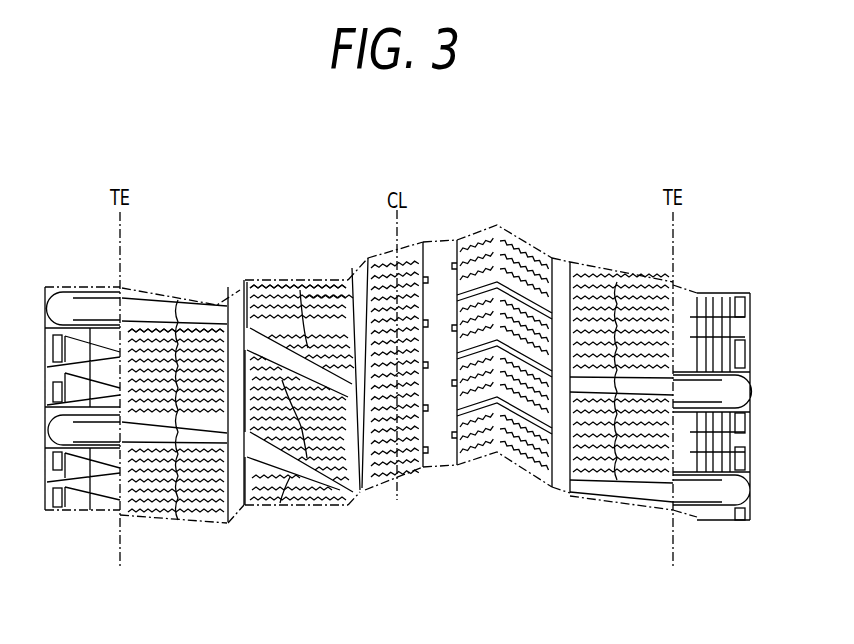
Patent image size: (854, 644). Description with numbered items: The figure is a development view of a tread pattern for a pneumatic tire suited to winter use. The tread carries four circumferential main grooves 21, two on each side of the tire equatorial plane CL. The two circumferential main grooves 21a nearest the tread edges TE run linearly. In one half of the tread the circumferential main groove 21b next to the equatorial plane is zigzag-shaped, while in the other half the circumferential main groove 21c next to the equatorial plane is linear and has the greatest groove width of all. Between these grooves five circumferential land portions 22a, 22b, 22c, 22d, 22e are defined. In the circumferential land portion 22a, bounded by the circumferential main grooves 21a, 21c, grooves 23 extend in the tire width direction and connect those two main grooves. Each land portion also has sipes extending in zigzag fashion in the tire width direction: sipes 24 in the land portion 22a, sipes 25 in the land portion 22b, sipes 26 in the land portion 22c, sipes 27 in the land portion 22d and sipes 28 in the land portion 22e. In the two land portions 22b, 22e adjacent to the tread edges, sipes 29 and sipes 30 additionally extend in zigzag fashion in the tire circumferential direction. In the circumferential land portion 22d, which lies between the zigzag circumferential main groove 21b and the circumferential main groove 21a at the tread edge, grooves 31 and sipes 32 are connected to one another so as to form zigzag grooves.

The circumferential main groove 21 is at (398, 345).
The circumferential main groove adjacent to tread edge 21a is at (240, 302).
The zigzag circumferential main groove 21b is at (360, 275).
The linear circumferential main groove 21c is at (440, 248).
The circumferential land portion 22a is at (502, 403).
The circumferential land portion 22b is at (621, 420).
The circumferential land portion 22c is at (396, 411).
The circumferential land portion 22d is at (244, 530).
The circumferential land portion 22e is at (120, 530).
The groove 23 is at (510, 285).
The sipe 24 is at (480, 243).
The sipe 25 is at (593, 273).
The sipe 26 is at (403, 247).
The sipe 27 is at (260, 286).
The sipe 28 is at (145, 325).
The sipe 29 is at (617, 282).
The sipe 30 is at (173, 328).
The groove 31 is at (327, 290).
The sipe 32 is at (300, 290).